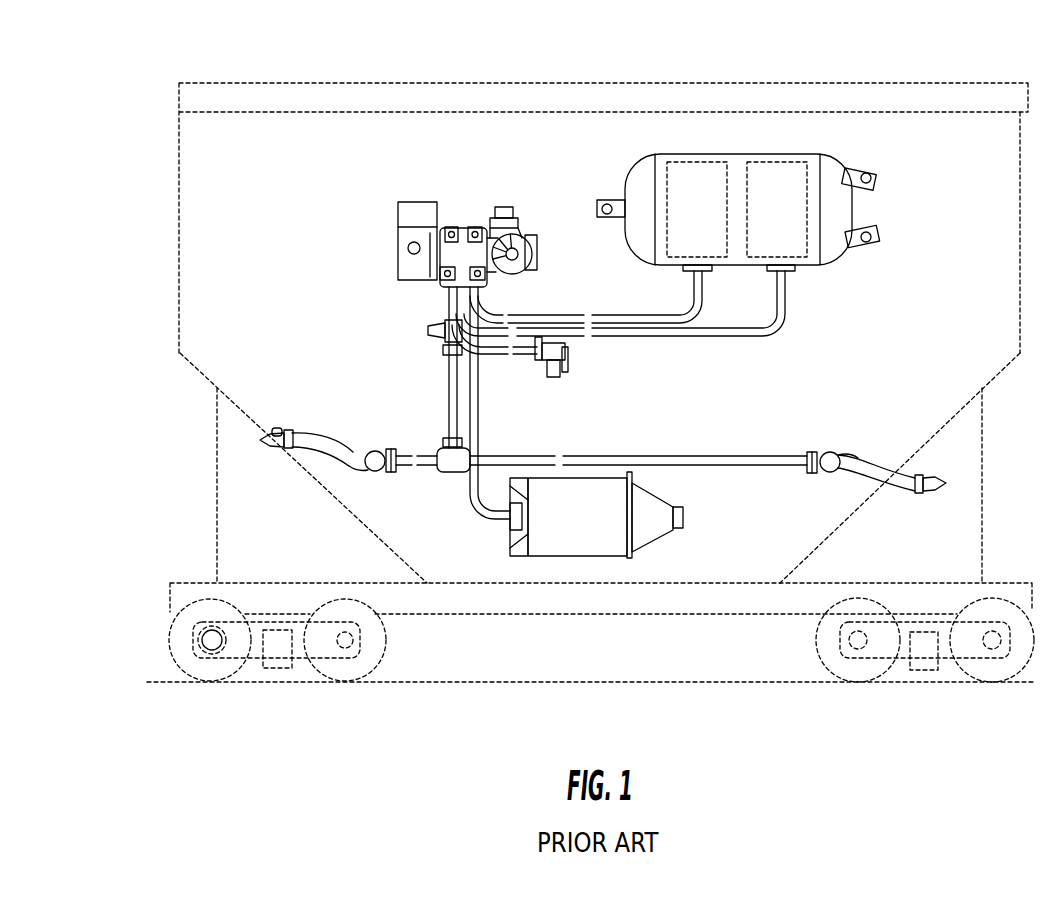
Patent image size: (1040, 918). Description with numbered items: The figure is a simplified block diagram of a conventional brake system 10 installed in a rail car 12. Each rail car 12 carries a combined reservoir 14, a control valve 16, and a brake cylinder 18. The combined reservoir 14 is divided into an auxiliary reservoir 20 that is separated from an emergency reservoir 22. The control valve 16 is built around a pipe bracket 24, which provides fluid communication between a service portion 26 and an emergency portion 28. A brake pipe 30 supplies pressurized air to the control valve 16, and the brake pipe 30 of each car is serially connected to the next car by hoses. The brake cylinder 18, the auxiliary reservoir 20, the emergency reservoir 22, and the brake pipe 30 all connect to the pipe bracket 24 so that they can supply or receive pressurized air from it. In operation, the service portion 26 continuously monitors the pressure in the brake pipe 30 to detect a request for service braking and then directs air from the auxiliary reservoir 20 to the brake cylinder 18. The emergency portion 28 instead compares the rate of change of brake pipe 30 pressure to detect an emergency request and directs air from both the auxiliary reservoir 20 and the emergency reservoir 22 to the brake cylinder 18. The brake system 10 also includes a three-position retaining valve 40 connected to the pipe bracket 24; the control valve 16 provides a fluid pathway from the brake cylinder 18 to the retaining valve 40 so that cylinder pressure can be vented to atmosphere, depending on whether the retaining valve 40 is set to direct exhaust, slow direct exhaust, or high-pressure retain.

The brake system 10 is at (306, 281).
The rail car 12 is at (190, 350).
The combined reservoir 14 is at (738, 148).
The control valve 16 is at (447, 212).
The brake cylinder 18 is at (569, 562).
The auxiliary reservoir 20 is at (690, 213).
The emergency reservoir 22 is at (793, 192).
The pipe bracket 24 is at (483, 278).
The service portion 26 is at (527, 228).
The emergency portion 28 is at (407, 274).
The brake pipe 30 is at (628, 456).
The retaining valve 40 is at (538, 362).